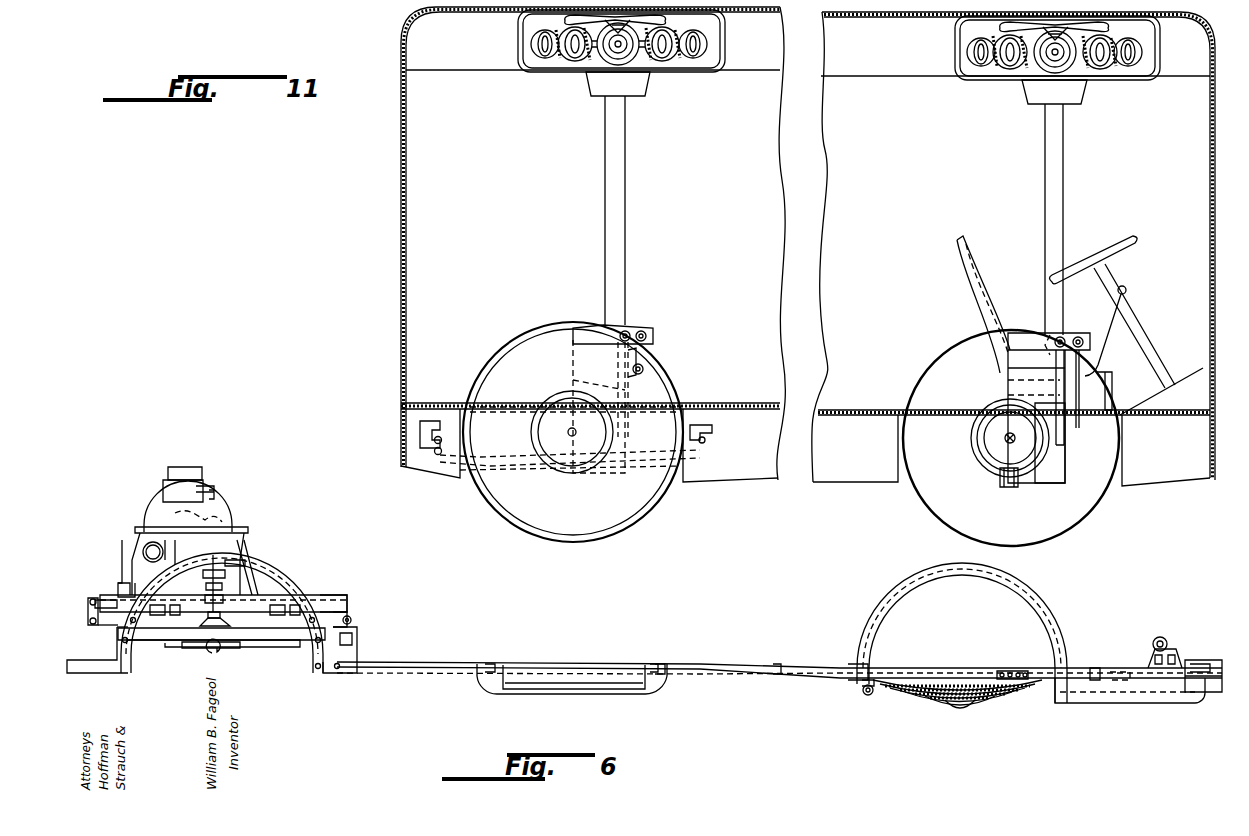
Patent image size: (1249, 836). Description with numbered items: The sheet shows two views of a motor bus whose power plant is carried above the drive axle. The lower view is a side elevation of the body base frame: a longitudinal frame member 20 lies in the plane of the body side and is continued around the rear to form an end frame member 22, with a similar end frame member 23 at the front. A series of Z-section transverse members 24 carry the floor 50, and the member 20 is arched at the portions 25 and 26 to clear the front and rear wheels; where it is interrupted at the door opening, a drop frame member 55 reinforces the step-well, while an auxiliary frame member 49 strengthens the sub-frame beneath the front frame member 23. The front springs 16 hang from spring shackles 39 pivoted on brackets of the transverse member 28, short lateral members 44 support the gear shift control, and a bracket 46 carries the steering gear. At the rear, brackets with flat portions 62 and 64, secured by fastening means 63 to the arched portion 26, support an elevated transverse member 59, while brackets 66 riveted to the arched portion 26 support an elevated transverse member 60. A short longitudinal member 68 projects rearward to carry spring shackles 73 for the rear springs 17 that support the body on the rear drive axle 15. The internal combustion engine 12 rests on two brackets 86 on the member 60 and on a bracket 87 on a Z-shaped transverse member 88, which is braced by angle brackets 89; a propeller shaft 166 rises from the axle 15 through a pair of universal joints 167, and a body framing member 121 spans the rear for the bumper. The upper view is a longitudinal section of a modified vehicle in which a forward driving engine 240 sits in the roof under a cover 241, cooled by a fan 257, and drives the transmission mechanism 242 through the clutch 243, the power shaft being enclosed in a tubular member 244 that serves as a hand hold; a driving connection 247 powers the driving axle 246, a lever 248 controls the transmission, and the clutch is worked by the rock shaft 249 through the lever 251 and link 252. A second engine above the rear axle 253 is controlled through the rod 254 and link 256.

In FIG. 11, the forward driving engine 240 is at (535, 38).
In FIG. 11, the cover 241 is at (568, 72).
In FIG. 11, the fan 257 is at (666, 20).
In FIG. 11, the tubular member 244 is at (625, 182).
In FIG. 11, the link 256 is at (573, 362).
In FIG. 11, the rod 254 is at (640, 380).
In FIG. 11, the rear axle 253 is at (568, 432).
In FIG. 11, the clutch 243 is at (1020, 338).
In FIG. 11, the transmission mechanism 242 is at (1015, 380).
In FIG. 11, the link 252 is at (1055, 387).
In FIG. 11, the lever 251 is at (1072, 336).
In FIG. 11, the rock shaft 249 is at (1080, 336).
In FIG. 11, the lever 248 is at (1105, 330).
In FIG. 11, the driving axle 246 is at (1007, 441).
In FIG. 11, the driving connection 247 is at (1055, 460).
In FIG. 6, the internal combustion engine 12 is at (170, 466).
In FIG. 6, the brackets 86 is at (125, 555).
In FIG. 6, the bracket 87 is at (247, 548).
In FIG. 6, the transverse member 88 is at (240, 562).
In FIG. 6, the universal joints 167 is at (222, 572).
In FIG. 6, the angle brackets 89 is at (224, 598).
In FIG. 6, the arched portions 26 is at (296, 600).
In FIG. 6, the longitudinal member 68 is at (328, 594).
In FIG. 6, the elevated transverse member 59 is at (349, 612).
In FIG. 6, the flat portion 64 is at (352, 618).
In FIG. 6, the elevated transverse member 60 is at (120, 585).
In FIG. 6, the brackets 66 is at (118, 601).
In FIG. 6, the body framing member 121 is at (88, 603).
In FIG. 6, the end frame member 22 is at (72, 660).
In FIG. 6, the spring shackles 73 is at (97, 626).
In FIG. 6, the propeller shaft 166 is at (204, 614).
In FIG. 6, the rear drive axle 15 is at (226, 655).
In FIG. 6, the springs 17 is at (288, 647).
In FIG. 6, the fastening means 63 is at (337, 669).
In FIG. 6, the flat portion 62 is at (345, 655).
In FIG. 6, the floor 50 is at (478, 660).
In FIG. 6, the drop frame member 55 is at (494, 688).
In FIG. 6, the transverse members 24 is at (770, 668).
In FIG. 6, the longitudinal frame member 20 is at (780, 672).
In FIG. 6, the arched portions 25 is at (845, 613).
In FIG. 6, the transverse member 28 is at (852, 664).
In FIG. 6, the spring shackles 39 is at (869, 696).
In FIG. 6, the springs 16 is at (990, 706).
In FIG. 6, the auxiliary frame member 49 is at (1140, 703).
In FIG. 6, the lateral members 44 is at (1124, 672).
In FIG. 6, the bracket 46 is at (1165, 640).
In FIG. 6, the end frame member 23 is at (1212, 660).